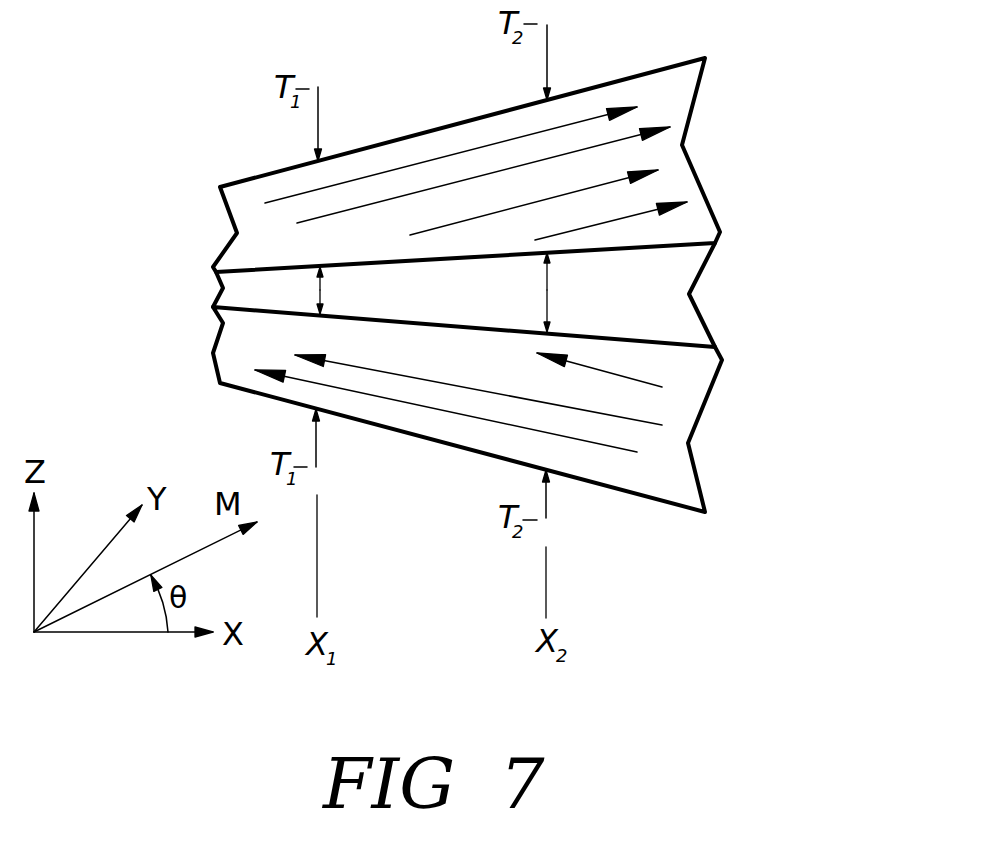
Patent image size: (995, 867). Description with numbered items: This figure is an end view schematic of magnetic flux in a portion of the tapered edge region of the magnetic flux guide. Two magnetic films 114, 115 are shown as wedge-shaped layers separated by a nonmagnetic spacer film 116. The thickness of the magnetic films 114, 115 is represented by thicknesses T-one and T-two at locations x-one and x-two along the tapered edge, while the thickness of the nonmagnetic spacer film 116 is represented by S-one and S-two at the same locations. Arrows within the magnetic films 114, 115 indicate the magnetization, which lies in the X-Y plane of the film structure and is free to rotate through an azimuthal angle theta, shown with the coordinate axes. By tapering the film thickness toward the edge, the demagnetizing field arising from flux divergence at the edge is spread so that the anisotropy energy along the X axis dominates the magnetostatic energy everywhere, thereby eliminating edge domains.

The magnetic film 114 is at (673, 458).
The magnetic film 115 is at (675, 163).
The nonmagnetic spacer film 116 is at (677, 290).